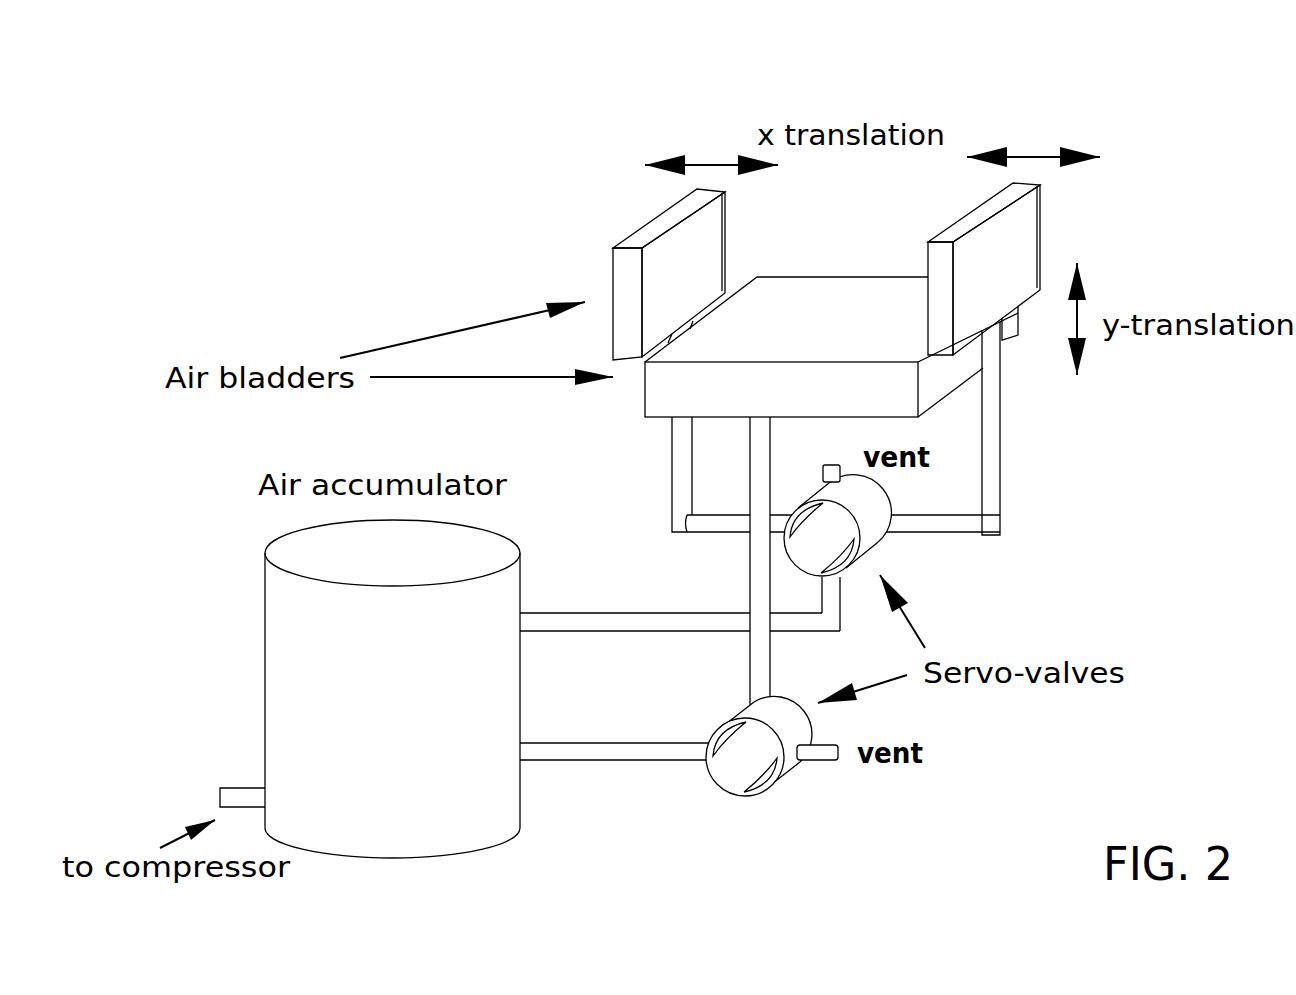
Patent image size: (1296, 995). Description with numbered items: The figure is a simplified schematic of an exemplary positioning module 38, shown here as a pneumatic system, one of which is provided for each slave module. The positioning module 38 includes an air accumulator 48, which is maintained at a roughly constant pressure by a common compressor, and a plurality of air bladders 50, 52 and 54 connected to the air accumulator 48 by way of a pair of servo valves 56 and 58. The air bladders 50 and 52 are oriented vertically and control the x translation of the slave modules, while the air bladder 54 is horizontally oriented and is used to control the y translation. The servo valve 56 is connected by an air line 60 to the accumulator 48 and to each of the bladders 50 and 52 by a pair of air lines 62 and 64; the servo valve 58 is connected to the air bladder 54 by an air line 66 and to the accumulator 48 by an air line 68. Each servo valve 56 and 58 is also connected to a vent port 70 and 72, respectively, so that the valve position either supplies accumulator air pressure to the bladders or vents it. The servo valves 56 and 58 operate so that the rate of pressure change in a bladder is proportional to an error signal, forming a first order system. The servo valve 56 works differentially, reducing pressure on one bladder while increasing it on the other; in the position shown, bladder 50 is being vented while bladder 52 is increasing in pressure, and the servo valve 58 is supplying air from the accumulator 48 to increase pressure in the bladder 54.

The positioning module 38 is at (1003, 90).
The air accumulator 48 is at (408, 857).
The air bladder 50 is at (655, 217).
The air bladder 52 is at (1043, 227).
The air bladder 54 is at (1003, 345).
The servo valve 56 is at (873, 550).
The servo valve 58 is at (763, 798).
The air line 60 is at (632, 612).
The air line 62 is at (672, 452).
The air line 64 is at (1005, 447).
The air line 66 is at (748, 658).
The air line 68 is at (605, 763).
The vent port 70 is at (838, 750).
The vent port 72 is at (831, 465).